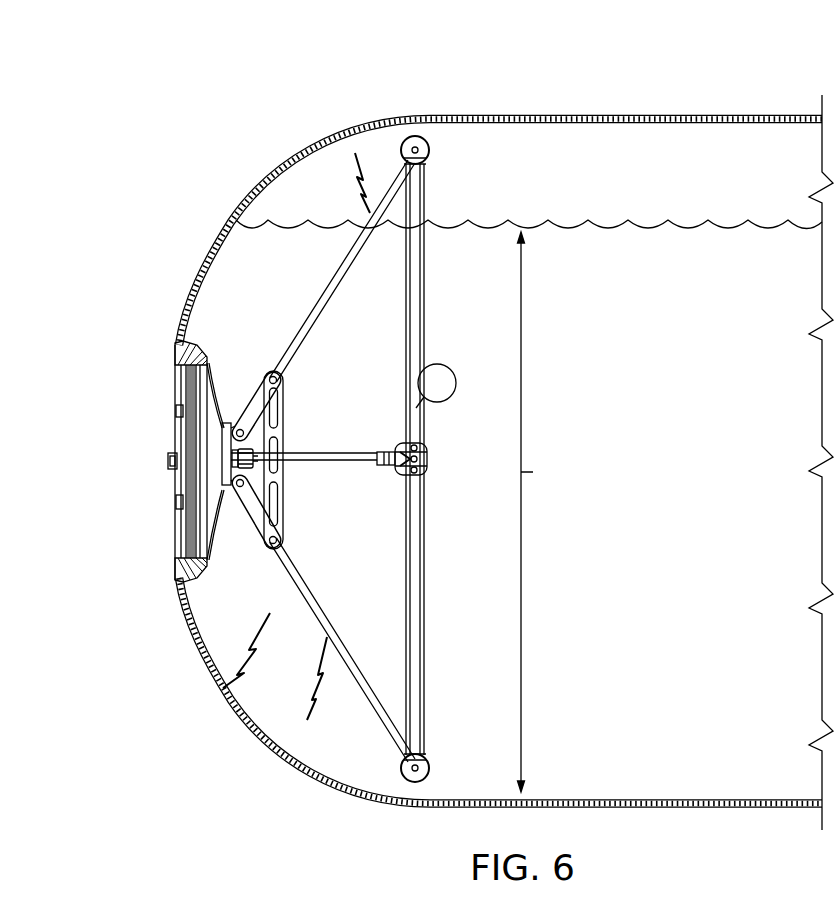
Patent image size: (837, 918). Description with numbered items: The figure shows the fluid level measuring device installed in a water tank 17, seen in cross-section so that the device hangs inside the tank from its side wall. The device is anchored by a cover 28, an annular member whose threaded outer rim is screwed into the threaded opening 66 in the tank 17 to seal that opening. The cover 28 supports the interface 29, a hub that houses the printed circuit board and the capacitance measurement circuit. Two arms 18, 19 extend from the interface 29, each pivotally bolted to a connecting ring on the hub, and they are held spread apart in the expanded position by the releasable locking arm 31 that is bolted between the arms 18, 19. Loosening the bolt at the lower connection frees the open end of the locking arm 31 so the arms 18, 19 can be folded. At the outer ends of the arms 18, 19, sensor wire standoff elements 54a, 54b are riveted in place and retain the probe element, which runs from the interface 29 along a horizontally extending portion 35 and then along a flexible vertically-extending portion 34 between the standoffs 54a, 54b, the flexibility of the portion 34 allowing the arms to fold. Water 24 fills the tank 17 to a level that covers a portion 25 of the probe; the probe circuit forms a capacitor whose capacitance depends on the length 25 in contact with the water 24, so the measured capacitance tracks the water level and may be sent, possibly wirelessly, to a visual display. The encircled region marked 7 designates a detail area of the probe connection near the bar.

The tank 17 is at (300, 132).
The water 24 is at (634, 216).
The portion of probe covered by water 25 is at (540, 512).
The opening 66 is at (165, 358).
The cover 28 is at (219, 391).
The interface 29 is at (232, 495).
The releasable locking arm 31 is at (291, 494).
The arm 18 is at (321, 318).
The arm 19 is at (318, 587).
The horizontally extending portion 35 is at (329, 449).
The vertically-extending portion 34 is at (433, 316).
The sensor wire standoff element 54a is at (440, 158).
The sensor wire standoff element 54b is at (440, 767).
The detail circle 7 is at (457, 385).